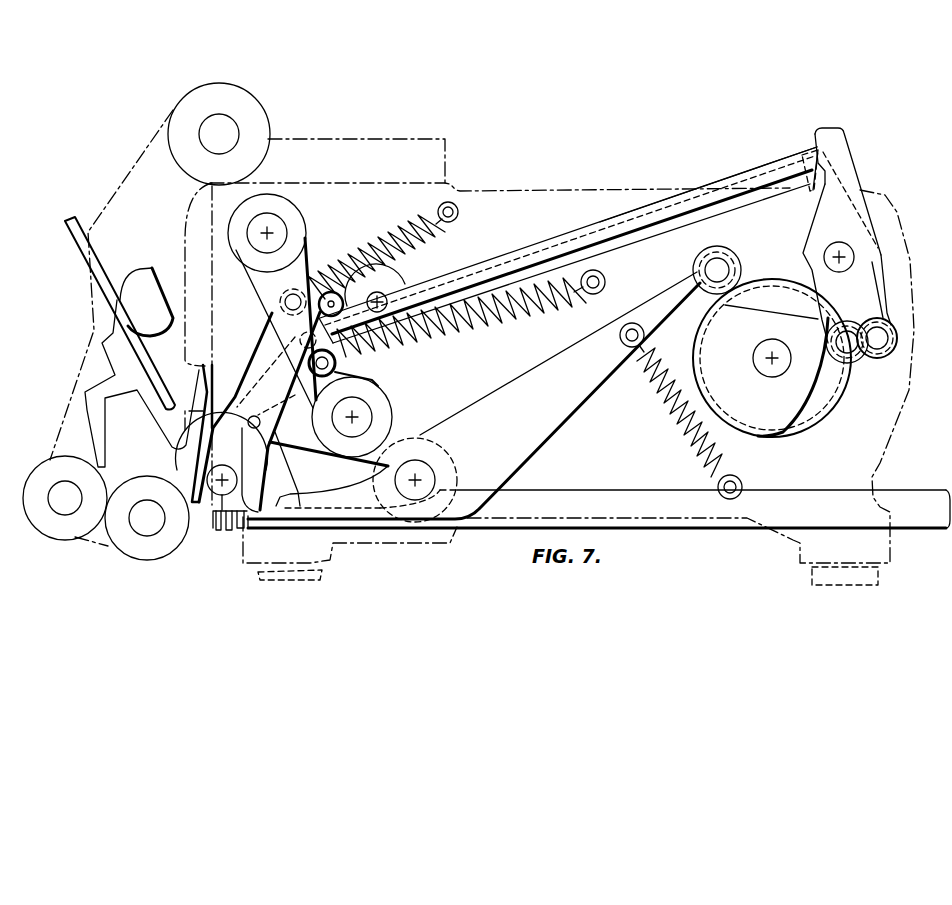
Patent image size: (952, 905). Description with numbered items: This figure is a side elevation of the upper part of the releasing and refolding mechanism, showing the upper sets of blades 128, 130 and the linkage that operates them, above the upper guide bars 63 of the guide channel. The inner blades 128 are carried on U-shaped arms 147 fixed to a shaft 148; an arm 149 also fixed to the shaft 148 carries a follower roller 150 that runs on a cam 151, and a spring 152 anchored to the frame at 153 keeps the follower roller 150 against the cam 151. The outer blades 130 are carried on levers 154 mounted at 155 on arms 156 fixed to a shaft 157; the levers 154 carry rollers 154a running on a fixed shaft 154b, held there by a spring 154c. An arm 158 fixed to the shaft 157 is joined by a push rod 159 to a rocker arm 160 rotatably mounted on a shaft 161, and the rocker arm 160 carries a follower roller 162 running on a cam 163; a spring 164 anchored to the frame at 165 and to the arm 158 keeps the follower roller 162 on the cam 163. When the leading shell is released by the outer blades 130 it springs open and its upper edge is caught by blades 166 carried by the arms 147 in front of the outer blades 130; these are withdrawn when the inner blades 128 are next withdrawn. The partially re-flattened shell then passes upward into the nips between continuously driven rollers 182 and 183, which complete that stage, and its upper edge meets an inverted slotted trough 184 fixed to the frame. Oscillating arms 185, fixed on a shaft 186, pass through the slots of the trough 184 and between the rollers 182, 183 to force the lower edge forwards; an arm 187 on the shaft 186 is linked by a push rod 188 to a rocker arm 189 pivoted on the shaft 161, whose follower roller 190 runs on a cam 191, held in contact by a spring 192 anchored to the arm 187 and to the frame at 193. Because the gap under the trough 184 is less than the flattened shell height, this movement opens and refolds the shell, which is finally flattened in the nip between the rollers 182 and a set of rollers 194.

The upper guide bars 63 is at (640, 500).
The inner blades 128 is at (240, 528).
The outer blades 130 is at (224, 530).
The U-shaped arms 147 is at (357, 498).
The shaft 148 is at (427, 473).
The arm 149 is at (575, 397).
The follower roller 150 is at (715, 258).
The cam 151 is at (737, 295).
The spring 152 is at (686, 428).
The spring anchorage on frame 153 is at (743, 485).
The levers 154 is at (272, 450).
The rollers 154a is at (283, 308).
The fixed shaft 154b is at (388, 290).
The spring 154c is at (338, 364).
The mounting of levers 155 is at (249, 418).
The arms 156 is at (317, 445).
The shaft 157 is at (365, 417).
The arm 158 is at (357, 378).
The push rod 159 is at (468, 275).
The rocker arm 160 is at (813, 188).
The shaft 161 is at (842, 268).
The follower roller 162 is at (866, 352).
The cam 163 is at (830, 405).
The spring 164 is at (388, 228).
The spring anchorage on frame 165 is at (459, 211).
The blades 166 is at (213, 522).
The rollers 182 is at (117, 545).
The rollers 183 is at (190, 460).
The inverted slotted trough 184 is at (95, 375).
The oscillating arms 185 is at (193, 490).
The shaft 186 is at (272, 213).
The arm 187 is at (300, 270).
The push rod 188 is at (752, 173).
The rocker arm 189 is at (840, 143).
The follower roller 190 is at (851, 364).
The cam 191 is at (790, 397).
The spring 192 is at (520, 317).
The spring anchorage on frame 193 is at (604, 278).
The rollers 194 is at (45, 472).